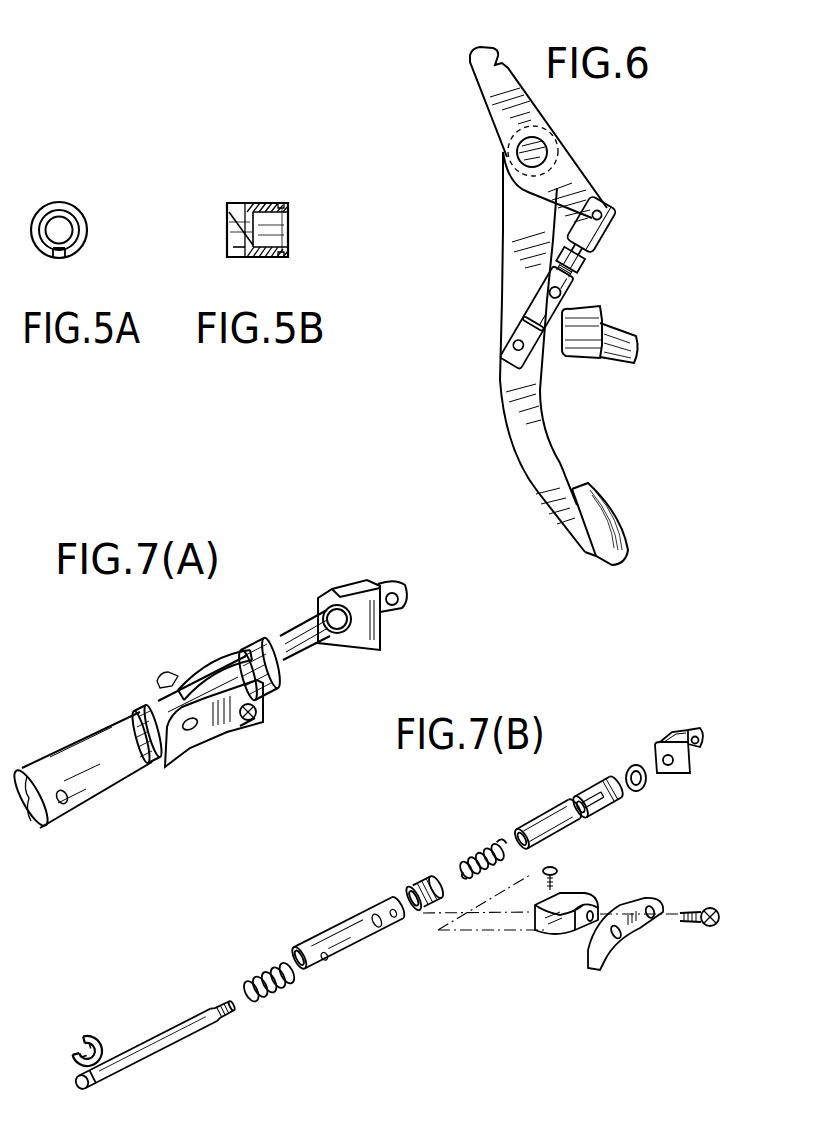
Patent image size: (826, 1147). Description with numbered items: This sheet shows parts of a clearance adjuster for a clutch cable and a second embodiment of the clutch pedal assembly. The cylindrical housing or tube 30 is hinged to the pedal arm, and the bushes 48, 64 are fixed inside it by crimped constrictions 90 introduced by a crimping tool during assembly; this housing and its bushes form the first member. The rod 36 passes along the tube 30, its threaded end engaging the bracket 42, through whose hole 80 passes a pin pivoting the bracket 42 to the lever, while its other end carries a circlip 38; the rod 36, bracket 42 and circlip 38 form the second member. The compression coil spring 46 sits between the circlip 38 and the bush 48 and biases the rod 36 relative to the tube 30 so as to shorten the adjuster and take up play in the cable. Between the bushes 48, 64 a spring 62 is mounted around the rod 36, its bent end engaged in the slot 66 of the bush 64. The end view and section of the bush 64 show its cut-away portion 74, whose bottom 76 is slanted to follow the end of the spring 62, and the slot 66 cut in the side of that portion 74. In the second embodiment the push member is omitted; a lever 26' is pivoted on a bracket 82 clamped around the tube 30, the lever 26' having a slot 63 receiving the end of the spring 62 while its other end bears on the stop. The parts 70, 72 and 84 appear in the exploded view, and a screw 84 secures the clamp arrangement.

In FIG. 6, the lever 26' is at (602, 319).
In FIG. 7A, the lever 26' is at (214, 717).
In FIG. 7A, the cylindrical housing 30 is at (71, 796).
In FIG. 7B, the cylindrical housing 30 is at (332, 927).
In FIG. 7B, the rod 36 is at (148, 1036).
In FIG. 7B, the circlip 38 is at (88, 1038).
In FIG. 7A, the bracket 42 is at (330, 591).
In FIG. 7B, the bracket 42 is at (656, 748).
In FIG. 7B, the compression coil spring 46 is at (255, 968).
In FIG. 7B, the bush 48 is at (411, 888).
In FIG. 7B, the spring 62 is at (465, 856).
In FIG. 7A, the slot 63 is at (195, 733).
In FIG. 5A, the bush 64 is at (61, 202).
In FIG. 5B, the bush 64 is at (266, 203).
In FIG. 7B, the bush 64 is at (590, 787).
In FIG. 5A, the slot 66 is at (60, 258).
In FIG. 5B, the slot 66 is at (240, 258).
In FIG. 7B, the sleeve 70 is at (540, 818).
In FIG. 5B, the groove 72 is at (282, 258).
In FIG. 5B, the left hand portion 74 is at (234, 248).
In FIG. 5A, the bottom 76 is at (45, 233).
In FIG. 5B, the bottom 76 is at (232, 224).
In FIG. 7A, the hole 80 is at (404, 608).
In FIG. 6, the bracket 82 is at (541, 284).
In FIG. 7A, the bracket 82 is at (207, 670).
In FIG. 7B, the bracket 82 is at (560, 927).
In FIG. 7A, the screw 84 is at (258, 715).
In FIG. 7B, the screw 84 is at (694, 907).
In FIG. 7A, the crimped constrictions 90 is at (141, 712).